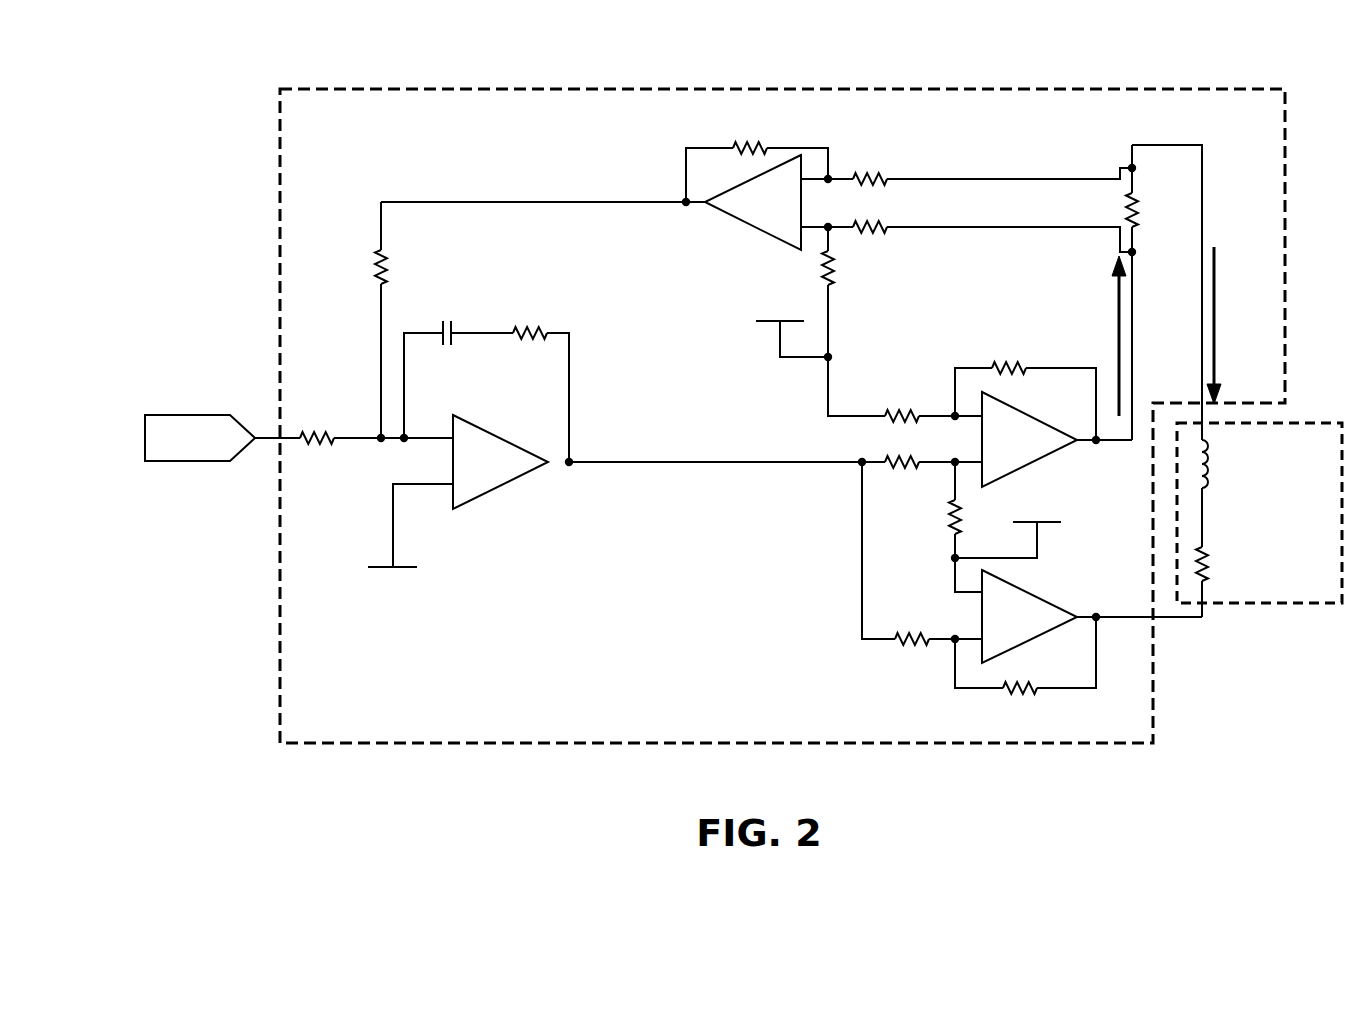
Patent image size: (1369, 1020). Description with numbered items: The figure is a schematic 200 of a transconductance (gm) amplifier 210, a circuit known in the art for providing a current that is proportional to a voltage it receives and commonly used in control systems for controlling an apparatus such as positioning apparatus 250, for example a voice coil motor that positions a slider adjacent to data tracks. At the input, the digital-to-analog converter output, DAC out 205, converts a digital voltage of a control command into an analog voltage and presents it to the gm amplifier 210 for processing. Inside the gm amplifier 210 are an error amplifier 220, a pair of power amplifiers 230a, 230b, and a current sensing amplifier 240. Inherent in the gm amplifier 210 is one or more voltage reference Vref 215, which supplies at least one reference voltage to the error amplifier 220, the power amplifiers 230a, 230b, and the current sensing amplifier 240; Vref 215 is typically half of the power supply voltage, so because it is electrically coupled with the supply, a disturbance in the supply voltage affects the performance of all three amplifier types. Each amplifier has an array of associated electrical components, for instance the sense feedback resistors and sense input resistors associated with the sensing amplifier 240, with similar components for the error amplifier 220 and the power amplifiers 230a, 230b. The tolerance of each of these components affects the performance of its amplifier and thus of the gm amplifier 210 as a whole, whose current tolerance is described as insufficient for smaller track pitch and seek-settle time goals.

The schematic 200 is at (237, 80).
The digital-to-analog converter output 205 is at (198, 414).
The transconductance amplifier 210 is at (278, 673).
The voltage reference Vref 215 is at (391, 598).
The error amplifier 220 is at (483, 497).
The power amplifier 230a is at (1040, 468).
The power amplifier 230b is at (1036, 595).
The current sensing amplifier 240 is at (766, 234).
The positioning apparatus 250 is at (1297, 607).